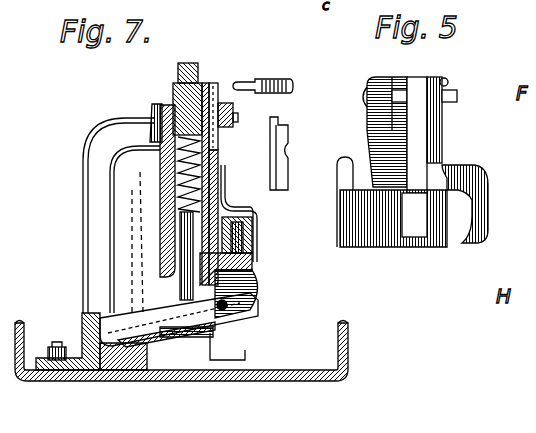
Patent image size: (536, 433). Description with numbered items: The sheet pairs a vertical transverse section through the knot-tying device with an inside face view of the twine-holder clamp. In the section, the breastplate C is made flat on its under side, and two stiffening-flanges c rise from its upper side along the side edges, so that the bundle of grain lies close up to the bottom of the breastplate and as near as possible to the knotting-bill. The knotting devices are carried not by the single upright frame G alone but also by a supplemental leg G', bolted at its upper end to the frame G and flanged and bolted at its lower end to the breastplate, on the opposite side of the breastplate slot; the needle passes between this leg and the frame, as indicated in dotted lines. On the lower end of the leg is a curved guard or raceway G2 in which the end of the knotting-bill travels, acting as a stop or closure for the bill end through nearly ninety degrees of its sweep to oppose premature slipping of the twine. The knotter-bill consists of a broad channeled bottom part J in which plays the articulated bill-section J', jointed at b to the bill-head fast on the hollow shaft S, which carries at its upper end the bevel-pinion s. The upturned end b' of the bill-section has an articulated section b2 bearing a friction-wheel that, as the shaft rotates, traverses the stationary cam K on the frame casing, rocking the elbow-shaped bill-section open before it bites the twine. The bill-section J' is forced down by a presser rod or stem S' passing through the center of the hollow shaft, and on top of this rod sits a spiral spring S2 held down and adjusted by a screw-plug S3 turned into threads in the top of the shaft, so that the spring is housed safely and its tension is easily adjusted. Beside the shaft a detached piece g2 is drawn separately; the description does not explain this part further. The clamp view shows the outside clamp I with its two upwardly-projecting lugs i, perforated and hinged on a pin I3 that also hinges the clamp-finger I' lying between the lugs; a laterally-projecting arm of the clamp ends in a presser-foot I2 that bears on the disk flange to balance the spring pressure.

In FIG. 7, the breastplate C is at (181, 352).
In FIG. 7, the stiffening-flange c is at (16, 320).
In FIG. 7, the curved guard or raceway G2 is at (82, 322).
In FIG. 7, the supplemental leg G' is at (119, 215).
In FIG. 7, the frame G is at (177, 253).
In FIG. 7, the bill-section J' is at (179, 259).
In FIG. 7, the channeled bottom part J is at (186, 344).
In FIG. 7, the bevel-pinion s is at (155, 107).
In FIG. 7, the screw-plug S3 is at (199, 72).
In FIG. 7, the spiral spring S2 is at (213, 143).
In FIG. 7, the presser rod or stem S' is at (255, 91).
In FIG. 7, the hollow shaft S is at (215, 218).
In FIG. 7, the cam K is at (258, 210).
In FIG. 7, the articulated section b2 is at (255, 257).
In FIG. 7, the upturned end b' is at (243, 270).
In FIG. 7, the joint b is at (242, 303).
In FIG. 7, the detached stop piece g2 is at (287, 162).
In FIG. 5, the upwardly-projecting lug i is at (464, 75).
In FIG. 5, the clamp-finger I' is at (437, 135).
In FIG. 5, the pin I3 is at (456, 97).
In FIG. 5, the clamp I is at (392, 202).
In FIG. 5, the presser-foot I2 is at (488, 214).